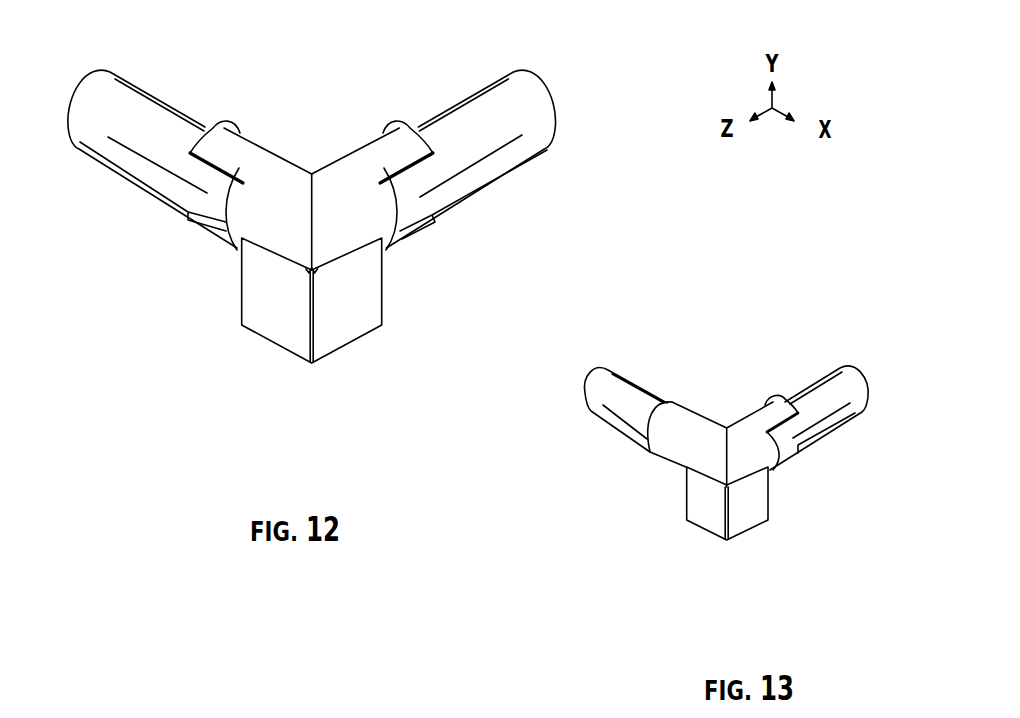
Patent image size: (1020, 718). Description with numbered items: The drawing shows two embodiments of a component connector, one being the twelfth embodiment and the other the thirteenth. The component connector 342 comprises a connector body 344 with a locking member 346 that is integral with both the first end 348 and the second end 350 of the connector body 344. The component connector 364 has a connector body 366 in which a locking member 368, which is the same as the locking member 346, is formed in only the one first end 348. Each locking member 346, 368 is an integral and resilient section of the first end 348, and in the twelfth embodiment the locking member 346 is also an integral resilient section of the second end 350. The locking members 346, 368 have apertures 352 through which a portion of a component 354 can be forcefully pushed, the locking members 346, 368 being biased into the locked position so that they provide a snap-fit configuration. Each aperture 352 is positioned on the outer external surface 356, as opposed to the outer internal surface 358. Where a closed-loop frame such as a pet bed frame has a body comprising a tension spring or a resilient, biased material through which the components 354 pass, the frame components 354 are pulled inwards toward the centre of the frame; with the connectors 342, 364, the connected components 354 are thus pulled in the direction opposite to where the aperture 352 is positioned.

In FIG. 12, the component connector 342 is at (147, 260).
In FIG. 12, the connector body 344 is at (290, 333).
In FIG. 12, the locking member 346 is at (393, 152).
In FIG. 12, the first end 348 is at (390, 170).
In FIG. 13, the first end 348 is at (822, 436).
In FIG. 12, the second end 350 is at (240, 167).
In FIG. 12, the aperture 352 is at (205, 190).
In FIG. 13, the aperture 352 is at (782, 410).
In FIG. 12, the component 354 is at (178, 185).
In FIG. 13, the component 354 is at (631, 404).
In FIG. 12, the outer external surface 356 is at (293, 228).
In FIG. 12, the outer internal surface 358 is at (312, 168).
In FIG. 13, the component connector 364 is at (653, 485).
In FIG. 13, the connector body 366 is at (708, 508).
In FIG. 13, the locking member 368 is at (695, 430).